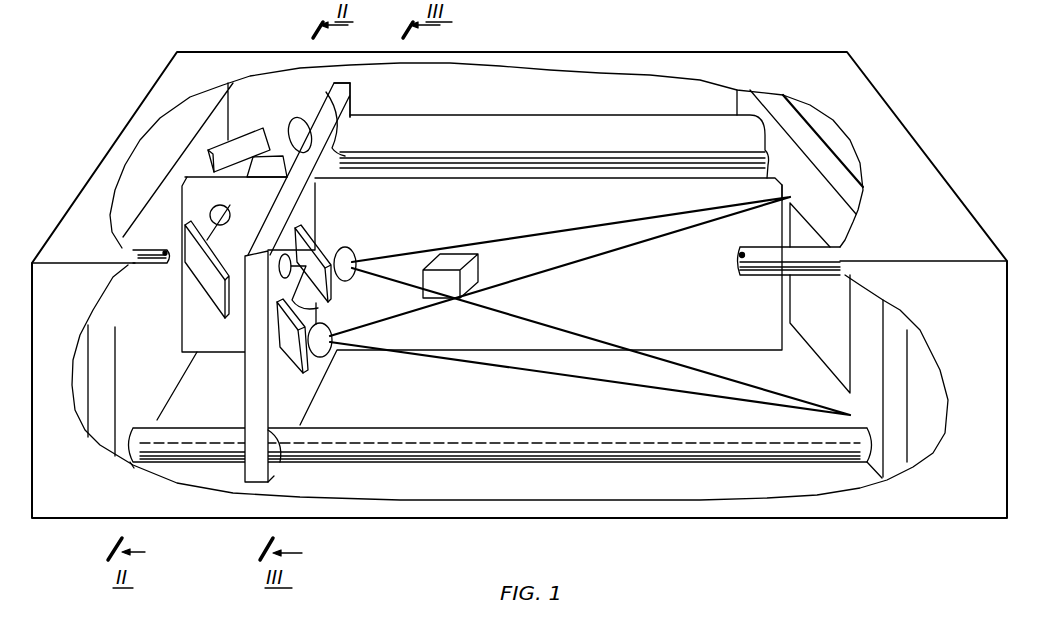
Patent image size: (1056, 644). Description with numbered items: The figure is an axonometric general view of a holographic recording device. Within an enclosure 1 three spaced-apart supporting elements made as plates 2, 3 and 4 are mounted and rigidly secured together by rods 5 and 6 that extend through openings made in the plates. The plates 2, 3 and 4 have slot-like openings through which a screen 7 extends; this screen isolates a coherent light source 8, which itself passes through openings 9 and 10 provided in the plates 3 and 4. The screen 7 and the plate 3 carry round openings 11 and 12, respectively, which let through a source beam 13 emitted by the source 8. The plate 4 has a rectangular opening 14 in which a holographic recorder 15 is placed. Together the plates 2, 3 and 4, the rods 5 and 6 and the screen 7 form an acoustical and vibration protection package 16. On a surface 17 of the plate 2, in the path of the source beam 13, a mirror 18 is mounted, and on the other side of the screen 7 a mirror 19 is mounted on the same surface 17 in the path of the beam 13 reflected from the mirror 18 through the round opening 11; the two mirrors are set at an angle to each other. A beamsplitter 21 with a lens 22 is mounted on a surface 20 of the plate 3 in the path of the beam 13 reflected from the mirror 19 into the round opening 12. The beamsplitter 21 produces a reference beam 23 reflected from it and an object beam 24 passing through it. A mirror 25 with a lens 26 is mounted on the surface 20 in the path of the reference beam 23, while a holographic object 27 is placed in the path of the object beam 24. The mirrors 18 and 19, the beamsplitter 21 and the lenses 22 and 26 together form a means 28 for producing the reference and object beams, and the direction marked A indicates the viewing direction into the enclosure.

The enclosure 1 is at (168, 80).
The plate 2 is at (235, 97).
The plate 3 is at (346, 82).
The plate 4 is at (793, 117).
The rod 5 is at (149, 272).
The rod 6 is at (768, 438).
The screen 7 is at (677, 188).
The coherent light source 8 is at (570, 124).
The opening 9 is at (330, 94).
The opening 10 is at (760, 145).
The round opening 11 is at (230, 213).
The round opening 12 is at (287, 253).
The source beam 13 is at (200, 220).
The rectangular opening 14 is at (806, 228).
The holographic recorder 15 is at (838, 360).
The acoustical and vibration protection package 16 is at (423, 402).
The surface 17 is at (167, 392).
The mirror 18 is at (242, 133).
The mirror 19 is at (207, 297).
The surface 20 is at (351, 110).
The beamsplitter 21 is at (300, 227).
The lens 22 is at (349, 255).
The reference beam 23 is at (583, 368).
The object beam 24 is at (552, 243).
The mirror 25 is at (288, 360).
The lens 26 is at (323, 366).
The holographic object 27 is at (452, 260).
The means for producing reference and object beams 28 is at (235, 327).
The viewing direction A is at (924, 392).